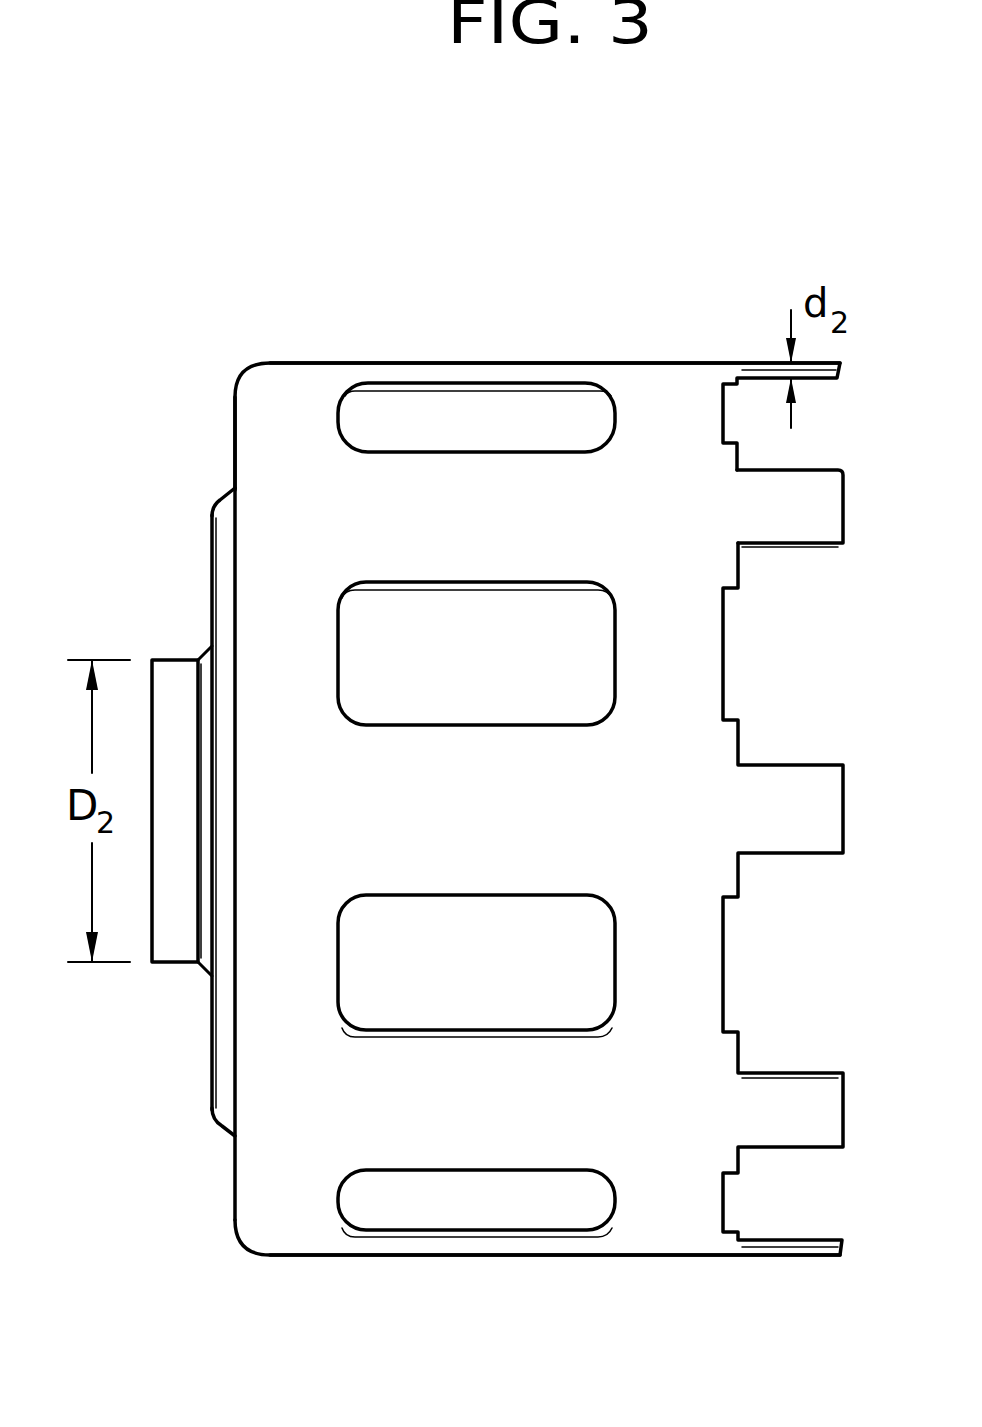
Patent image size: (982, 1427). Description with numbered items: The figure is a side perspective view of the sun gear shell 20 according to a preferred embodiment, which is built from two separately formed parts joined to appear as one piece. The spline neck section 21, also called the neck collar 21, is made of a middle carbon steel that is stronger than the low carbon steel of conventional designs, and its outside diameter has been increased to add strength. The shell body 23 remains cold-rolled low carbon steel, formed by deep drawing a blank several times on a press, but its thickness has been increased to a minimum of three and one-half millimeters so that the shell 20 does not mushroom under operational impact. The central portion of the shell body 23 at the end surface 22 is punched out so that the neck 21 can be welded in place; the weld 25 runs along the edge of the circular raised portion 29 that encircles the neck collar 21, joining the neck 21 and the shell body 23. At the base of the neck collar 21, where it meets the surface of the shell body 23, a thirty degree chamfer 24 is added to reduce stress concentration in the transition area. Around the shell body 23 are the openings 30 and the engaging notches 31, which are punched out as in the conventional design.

The sun gear shell 20 is at (610, 222).
The spline neck section 21 is at (178, 660).
The end surface 22 is at (236, 1163).
The shell body 23 is at (410, 363).
The chamfer 24 is at (210, 967).
The weld 25 is at (233, 490).
The raised portion 29 is at (213, 1068).
The opening 30 is at (578, 582).
The engaging notch 31 is at (808, 548).